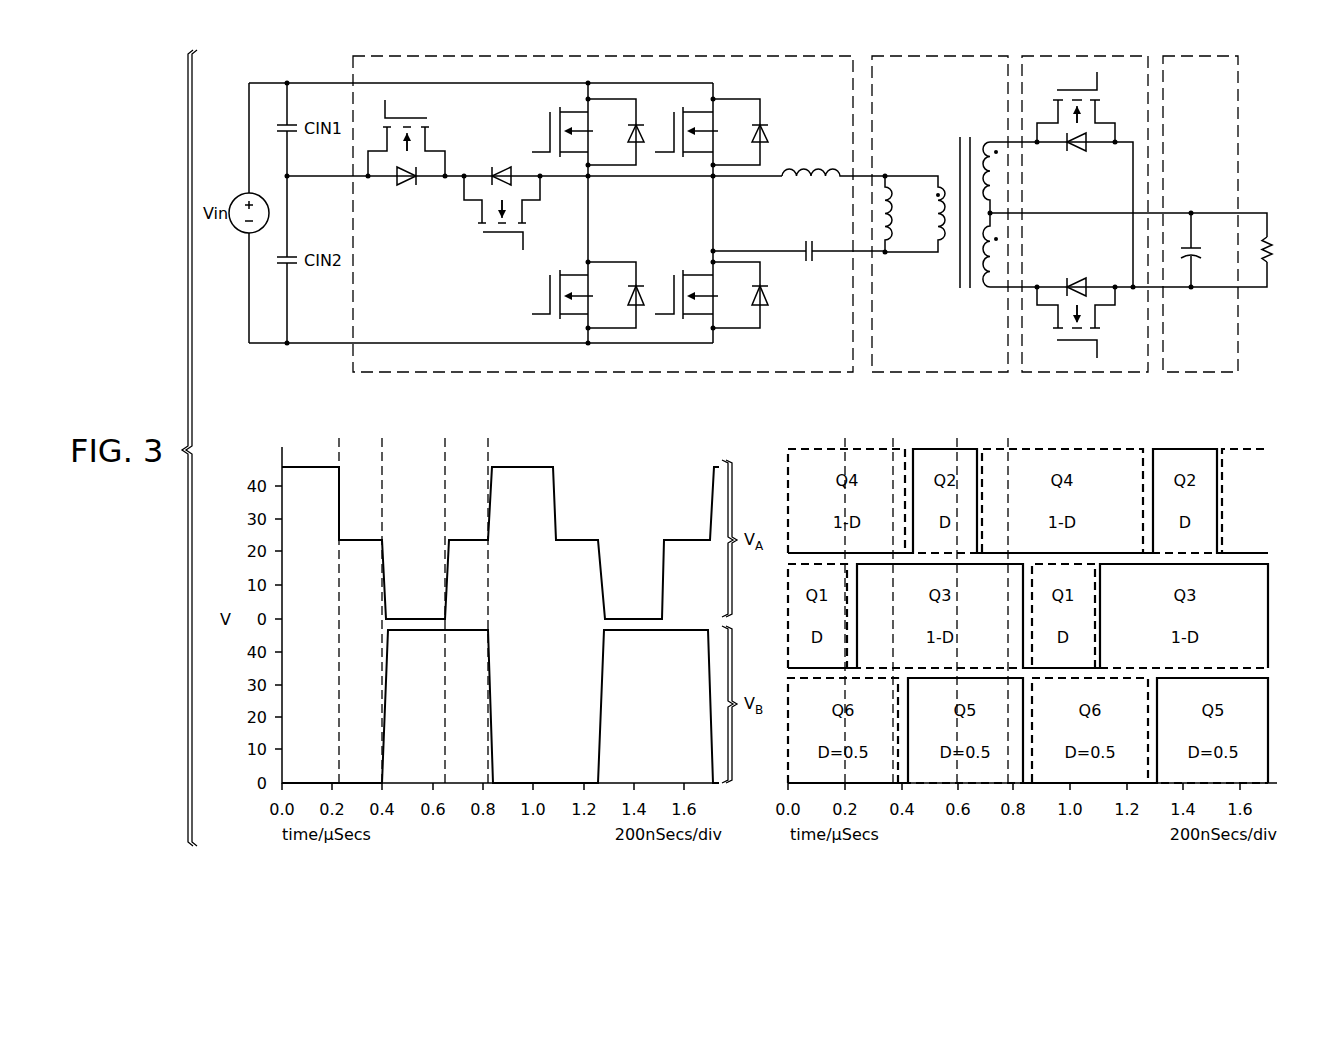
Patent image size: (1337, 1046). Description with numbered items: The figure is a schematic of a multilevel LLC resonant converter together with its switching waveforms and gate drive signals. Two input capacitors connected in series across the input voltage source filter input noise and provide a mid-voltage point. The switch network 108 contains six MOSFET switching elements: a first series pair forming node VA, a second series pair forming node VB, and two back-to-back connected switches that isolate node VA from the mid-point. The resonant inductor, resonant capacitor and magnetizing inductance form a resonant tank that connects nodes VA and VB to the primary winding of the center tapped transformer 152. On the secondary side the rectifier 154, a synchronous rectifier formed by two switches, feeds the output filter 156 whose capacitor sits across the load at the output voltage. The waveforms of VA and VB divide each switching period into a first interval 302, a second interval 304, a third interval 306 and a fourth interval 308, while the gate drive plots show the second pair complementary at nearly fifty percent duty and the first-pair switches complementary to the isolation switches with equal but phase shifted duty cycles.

The switch network 108 is at (801, 93).
The transformer 152 is at (923, 93).
The rectifier 154 is at (1107, 93).
The output filter 156 is at (1183, 93).
The first interval 302 is at (305, 453).
The second interval 304 is at (358, 453).
The third interval 306 is at (410, 453).
The fourth interval 308 is at (460, 453).